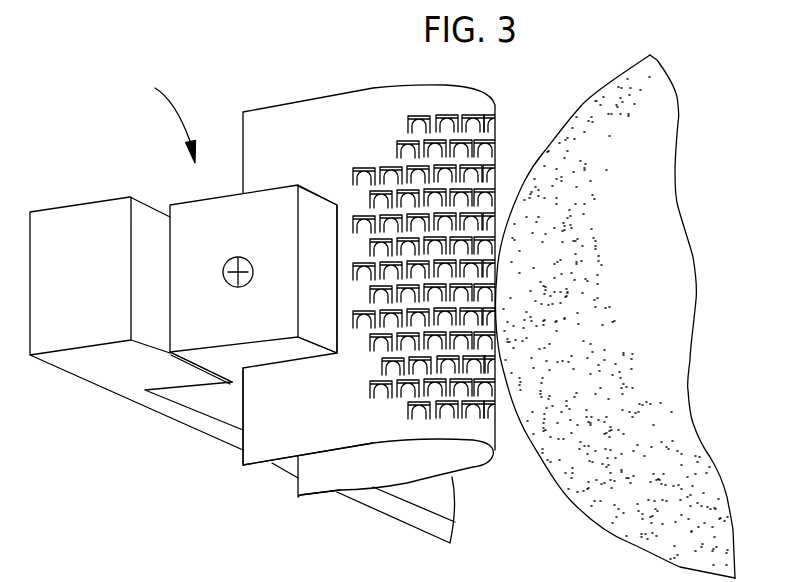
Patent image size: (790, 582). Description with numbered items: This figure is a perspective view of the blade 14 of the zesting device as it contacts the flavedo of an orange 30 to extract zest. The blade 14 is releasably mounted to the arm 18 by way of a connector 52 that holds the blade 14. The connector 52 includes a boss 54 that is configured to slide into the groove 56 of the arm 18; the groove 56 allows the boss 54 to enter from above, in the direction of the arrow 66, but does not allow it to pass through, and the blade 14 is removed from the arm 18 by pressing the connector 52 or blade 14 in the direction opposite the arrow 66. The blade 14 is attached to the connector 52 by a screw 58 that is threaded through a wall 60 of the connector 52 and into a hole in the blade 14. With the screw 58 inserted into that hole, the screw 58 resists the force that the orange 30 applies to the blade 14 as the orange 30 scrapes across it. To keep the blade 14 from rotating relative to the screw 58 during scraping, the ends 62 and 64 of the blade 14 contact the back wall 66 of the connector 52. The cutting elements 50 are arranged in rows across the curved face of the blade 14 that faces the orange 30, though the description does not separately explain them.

The blade 14 is at (315, 85).
The arm 18 is at (98, 388).
The orange 30 is at (573, 503).
The tread elements 50 is at (492, 183).
The connector 52 is at (194, 199).
The boss 54 is at (217, 395).
The groove 56 is at (212, 418).
The screw 58 is at (247, 281).
The wall 60 is at (327, 280).
The end of the blade 62 is at (240, 455).
The end of the blade 64 is at (300, 480).
The back wall / arrow 66 is at (181, 114).